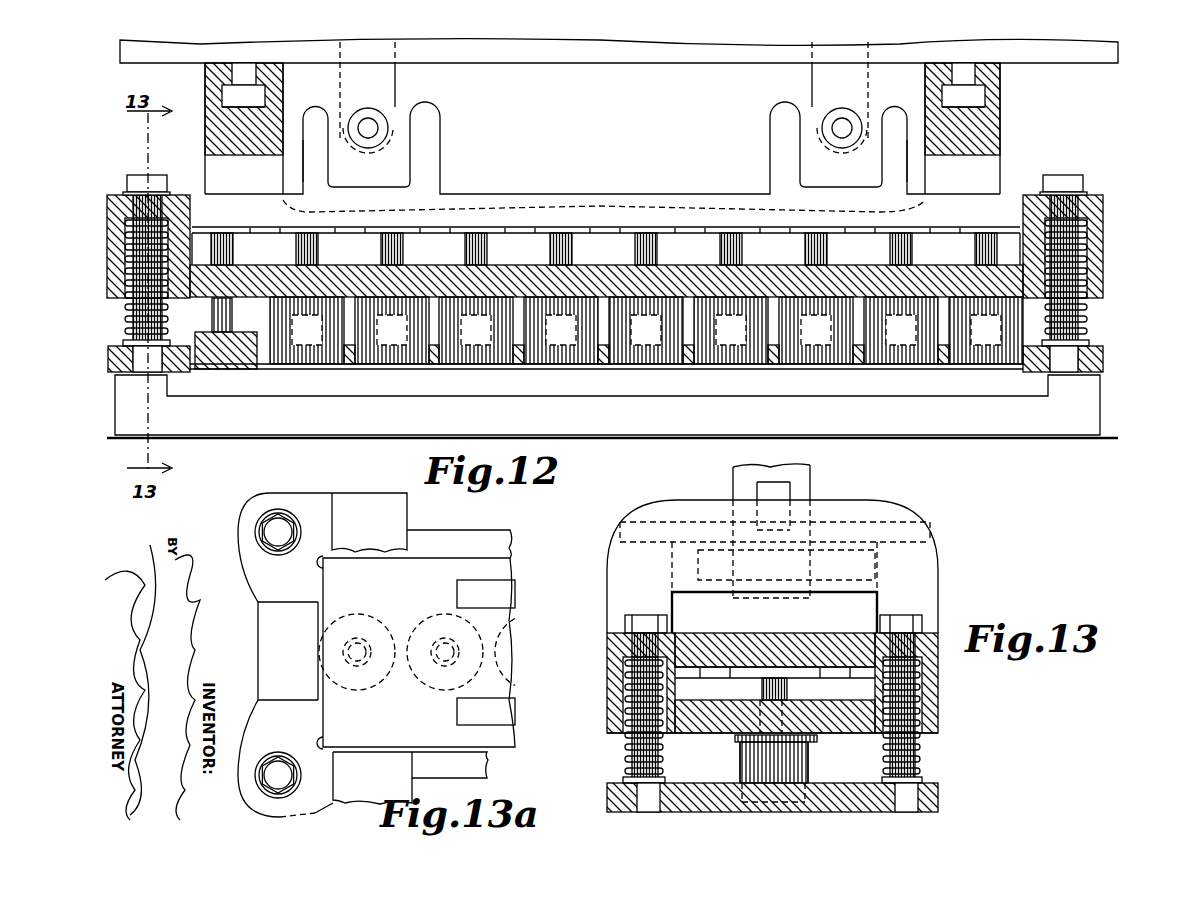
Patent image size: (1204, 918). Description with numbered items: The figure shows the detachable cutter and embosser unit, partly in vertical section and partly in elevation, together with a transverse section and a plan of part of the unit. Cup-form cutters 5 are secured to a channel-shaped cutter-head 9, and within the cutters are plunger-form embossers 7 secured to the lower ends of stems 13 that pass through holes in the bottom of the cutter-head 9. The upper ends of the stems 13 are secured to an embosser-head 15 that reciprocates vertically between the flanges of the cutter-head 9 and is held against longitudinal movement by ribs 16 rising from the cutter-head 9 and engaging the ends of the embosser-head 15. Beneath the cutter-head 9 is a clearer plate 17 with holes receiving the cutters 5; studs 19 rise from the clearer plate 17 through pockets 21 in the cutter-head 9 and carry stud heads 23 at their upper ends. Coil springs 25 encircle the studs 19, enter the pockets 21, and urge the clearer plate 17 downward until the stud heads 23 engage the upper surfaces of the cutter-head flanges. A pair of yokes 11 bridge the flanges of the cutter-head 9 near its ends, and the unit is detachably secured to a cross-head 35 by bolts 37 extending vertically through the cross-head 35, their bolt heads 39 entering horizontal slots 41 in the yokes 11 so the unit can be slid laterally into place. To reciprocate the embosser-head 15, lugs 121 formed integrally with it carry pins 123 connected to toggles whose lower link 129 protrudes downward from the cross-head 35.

In FIG. 12, the cutters 5 is at (190, 318).
In FIG. 13A, the cutters 5 is at (387, 680).
In FIG. 13, the cutters 5 is at (740, 762).
In FIG. 12, the embossers 7 is at (229, 371).
In FIG. 13, the embossers 7 is at (800, 763).
In FIG. 12, the cutter-head 9 is at (108, 263).
In FIG. 13A, the cutter-head 9 is at (243, 515).
In FIG. 13, the cutter-head 9 is at (607, 687).
In FIG. 12, the yokes 11 is at (205, 128).
In FIG. 13A, the yokes 11 is at (413, 513).
In FIG. 13, the yokes 11 is at (617, 573).
In FIG. 12, the stems 13 is at (635, 247).
In FIG. 13, the stems 13 is at (787, 690).
In FIG. 12, the embosser-head 15 is at (603, 195).
In FIG. 13A, the embosser-head 15 is at (435, 570).
In FIG. 13, the embosser-head 15 is at (790, 633).
In FIG. 13A, the ribs 16 is at (323, 588).
In FIG. 13, the ribs 16 is at (717, 690).
In FIG. 12, the clearer plate 17 is at (1103, 355).
In FIG. 13, the clearer plate 17 is at (607, 793).
In FIG. 12, the studs 19 is at (130, 315).
In FIG. 13, the studs 19 is at (627, 745).
In FIG. 12, the pockets 21 is at (1085, 243).
In FIG. 13, the pockets 21 is at (632, 670).
In FIG. 12, the stud heads 23 is at (148, 176).
In FIG. 13A, the stud heads 23 is at (272, 538).
In FIG. 13, the stud heads 23 is at (625, 619).
In FIG. 12, the coil springs 25 is at (130, 333).
In FIG. 13, the coil springs 25 is at (625, 763).
In FIG. 12, the cross-head 35 is at (580, 63).
In FIG. 12, the bolts 37 is at (240, 73).
In FIG. 12, the bolt heads 39 is at (247, 93).
In FIG. 12, the slots 41 is at (240, 93).
In FIG. 13, the slots 41 is at (620, 532).
In FIG. 12, the lugs 121 is at (428, 155).
In FIG. 13, the lugs 121 is at (845, 608).
In FIG. 12, the pins 123 is at (372, 128).
In FIG. 12, the lower link 129 is at (395, 80).
In FIG. 13, the lower link 129 is at (742, 477).